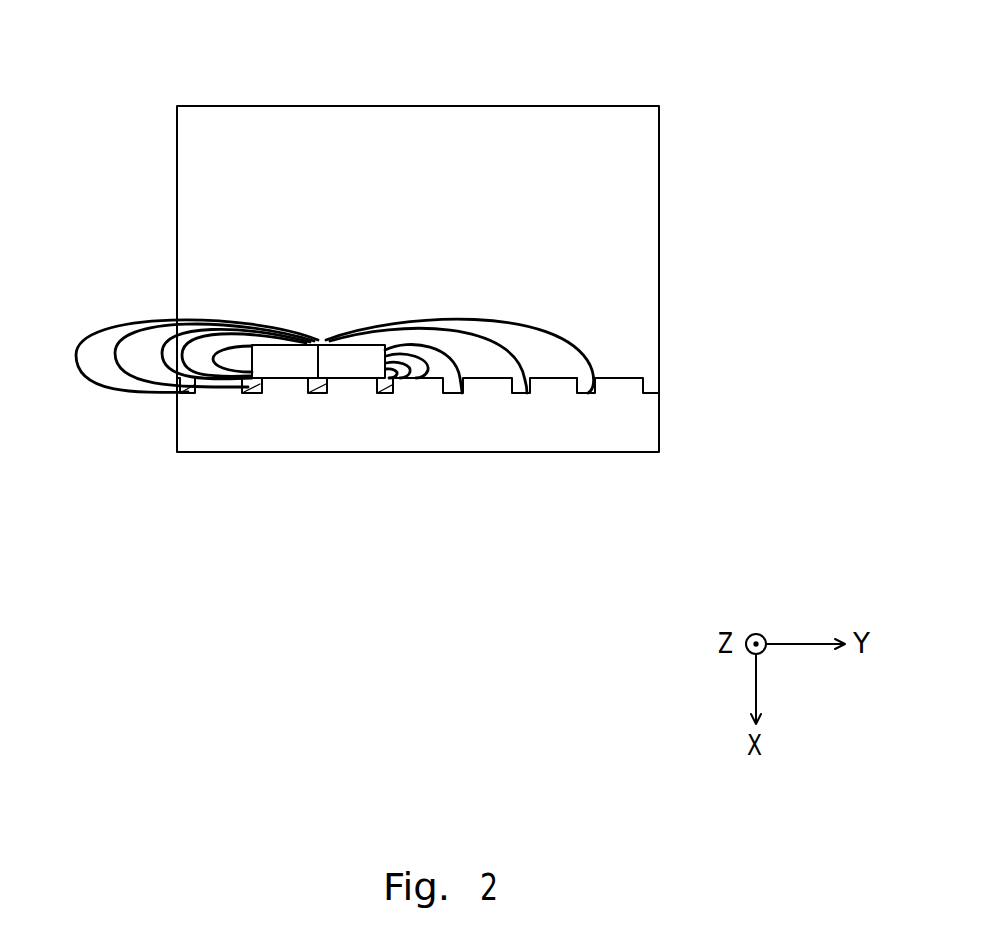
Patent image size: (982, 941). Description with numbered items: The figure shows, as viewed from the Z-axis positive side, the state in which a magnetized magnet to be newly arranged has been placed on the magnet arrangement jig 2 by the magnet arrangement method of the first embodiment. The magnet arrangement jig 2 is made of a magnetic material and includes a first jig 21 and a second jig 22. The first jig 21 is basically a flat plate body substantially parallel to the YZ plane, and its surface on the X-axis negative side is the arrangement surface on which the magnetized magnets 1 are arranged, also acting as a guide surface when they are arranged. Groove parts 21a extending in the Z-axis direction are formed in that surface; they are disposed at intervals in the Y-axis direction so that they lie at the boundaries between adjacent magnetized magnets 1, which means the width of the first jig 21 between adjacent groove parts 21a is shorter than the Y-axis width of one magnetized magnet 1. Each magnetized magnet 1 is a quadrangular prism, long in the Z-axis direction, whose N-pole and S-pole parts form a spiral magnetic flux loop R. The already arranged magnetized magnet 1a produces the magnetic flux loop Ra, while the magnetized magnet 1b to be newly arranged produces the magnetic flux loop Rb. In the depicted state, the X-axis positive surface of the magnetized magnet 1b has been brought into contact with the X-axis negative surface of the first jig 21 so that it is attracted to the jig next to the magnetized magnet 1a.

The magnetized magnet 1 is at (328, 190).
The already arranged magnetized magnet 1a is at (280, 356).
The magnetized magnet to be newly arranged 1b is at (344, 353).
The magnet arrangement jig 2 is at (685, 143).
The first jig 21 is at (672, 418).
The groove part 21a is at (585, 394).
The second jig 22 is at (609, 122).
The magnetic flux loop R is at (406, 319).
The magnetic flux loop of the already arranged magnetized magnet Ra is at (107, 322).
The magnetic flux loop of the magnetized magnet to be newly arranged Rb is at (595, 362).